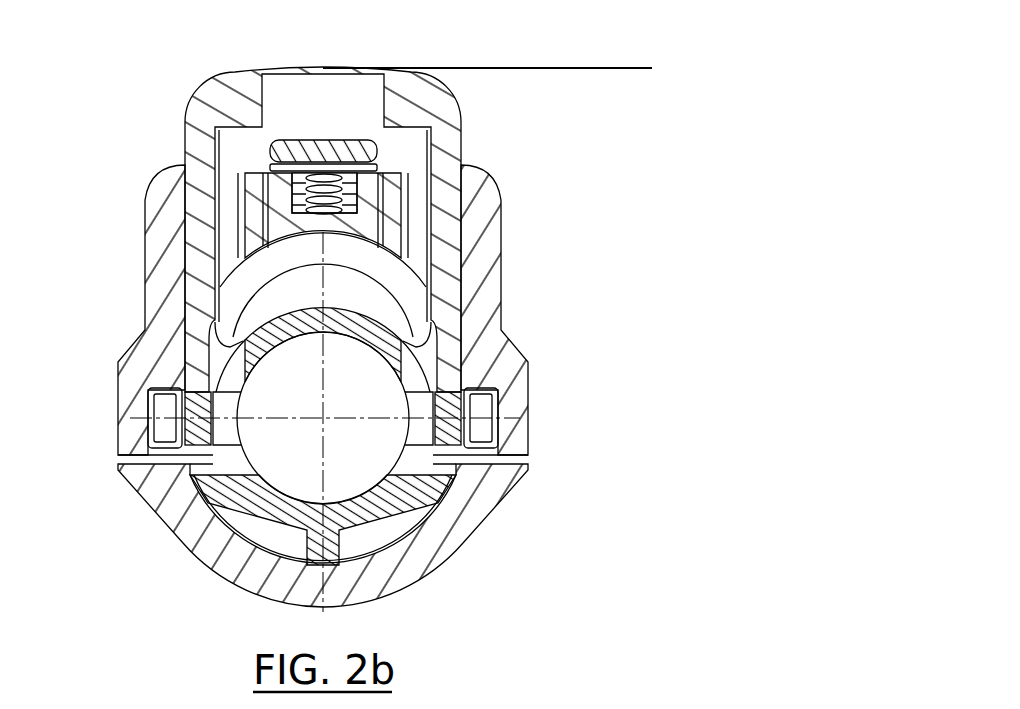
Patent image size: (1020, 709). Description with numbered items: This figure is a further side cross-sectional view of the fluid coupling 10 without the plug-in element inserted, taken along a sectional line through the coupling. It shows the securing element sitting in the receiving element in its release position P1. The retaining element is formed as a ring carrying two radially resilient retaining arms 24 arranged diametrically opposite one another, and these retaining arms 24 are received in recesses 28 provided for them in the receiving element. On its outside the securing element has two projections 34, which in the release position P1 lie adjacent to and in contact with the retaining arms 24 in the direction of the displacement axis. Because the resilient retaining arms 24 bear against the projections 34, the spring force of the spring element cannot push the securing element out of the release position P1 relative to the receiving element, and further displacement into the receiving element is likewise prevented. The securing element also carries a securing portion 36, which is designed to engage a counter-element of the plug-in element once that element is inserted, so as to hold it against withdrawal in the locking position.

The fluid coupling 10 is at (110, 98).
The release position P1 is at (509, 71).
The retaining arms 24 is at (450, 410).
The recesses 28 is at (484, 432).
The projections 34 is at (445, 368).
The securing portion 36 is at (411, 302).